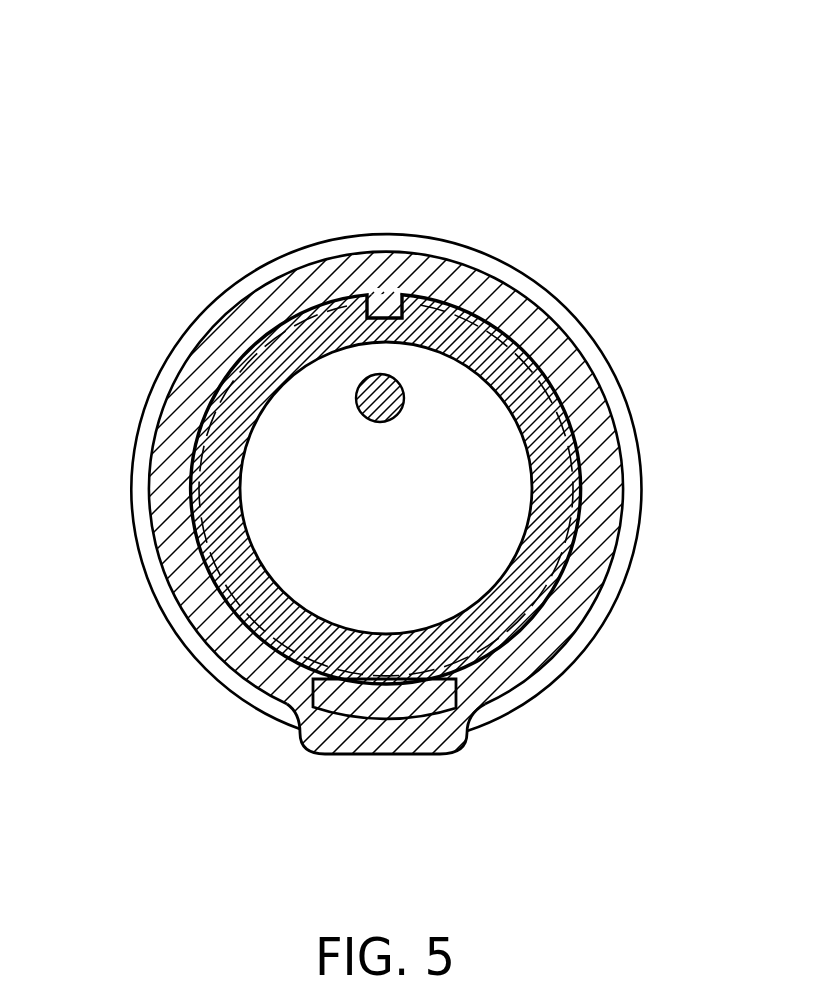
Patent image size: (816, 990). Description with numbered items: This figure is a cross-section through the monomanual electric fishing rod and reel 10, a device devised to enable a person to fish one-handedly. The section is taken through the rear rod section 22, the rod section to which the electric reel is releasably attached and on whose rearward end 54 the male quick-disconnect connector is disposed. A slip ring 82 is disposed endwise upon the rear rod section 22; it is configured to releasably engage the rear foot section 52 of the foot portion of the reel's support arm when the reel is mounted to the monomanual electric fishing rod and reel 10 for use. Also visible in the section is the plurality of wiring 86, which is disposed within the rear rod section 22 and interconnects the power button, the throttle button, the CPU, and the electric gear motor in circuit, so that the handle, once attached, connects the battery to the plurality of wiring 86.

The monomanual electric fishing rod and reel 10 is at (406, 399).
The rear rod section 22 is at (250, 600).
The rear foot section 52 is at (468, 698).
The rearward end 54 is at (622, 424).
The slip ring 82 is at (538, 332).
The plurality of wiring 86 is at (393, 397).